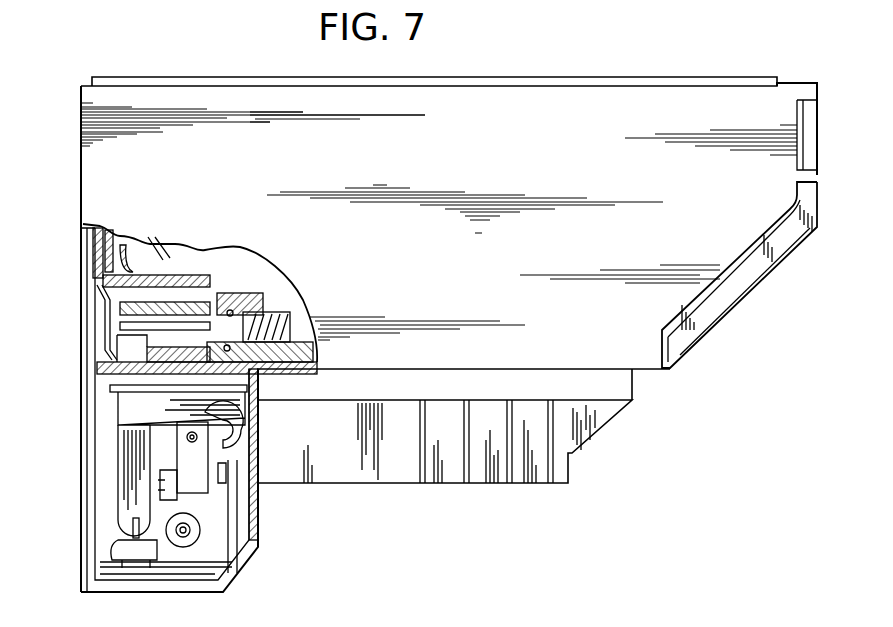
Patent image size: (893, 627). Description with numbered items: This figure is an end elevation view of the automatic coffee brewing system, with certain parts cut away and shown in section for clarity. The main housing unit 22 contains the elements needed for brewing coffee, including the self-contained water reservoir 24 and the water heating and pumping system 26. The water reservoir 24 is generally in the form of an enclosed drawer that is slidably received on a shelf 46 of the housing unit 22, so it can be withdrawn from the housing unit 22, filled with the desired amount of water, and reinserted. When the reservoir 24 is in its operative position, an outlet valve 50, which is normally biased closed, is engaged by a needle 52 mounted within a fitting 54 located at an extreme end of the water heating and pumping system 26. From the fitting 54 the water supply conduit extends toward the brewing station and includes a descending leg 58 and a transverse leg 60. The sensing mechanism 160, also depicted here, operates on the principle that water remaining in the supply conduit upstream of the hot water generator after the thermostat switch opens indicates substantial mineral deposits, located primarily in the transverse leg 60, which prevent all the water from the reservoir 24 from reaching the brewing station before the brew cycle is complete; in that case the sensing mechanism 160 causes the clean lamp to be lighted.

The main housing unit 22 is at (668, 71).
The water reservoir 24 is at (203, 262).
The water heating and pumping system 26 is at (126, 572).
The shelf 46 is at (297, 372).
The outlet valve 50 is at (268, 308).
The needle 52 is at (127, 345).
The fitting 54 is at (120, 300).
The descending leg 58 is at (130, 483).
The transverse leg 60 is at (113, 543).
The sensing mechanism 160 is at (106, 407).